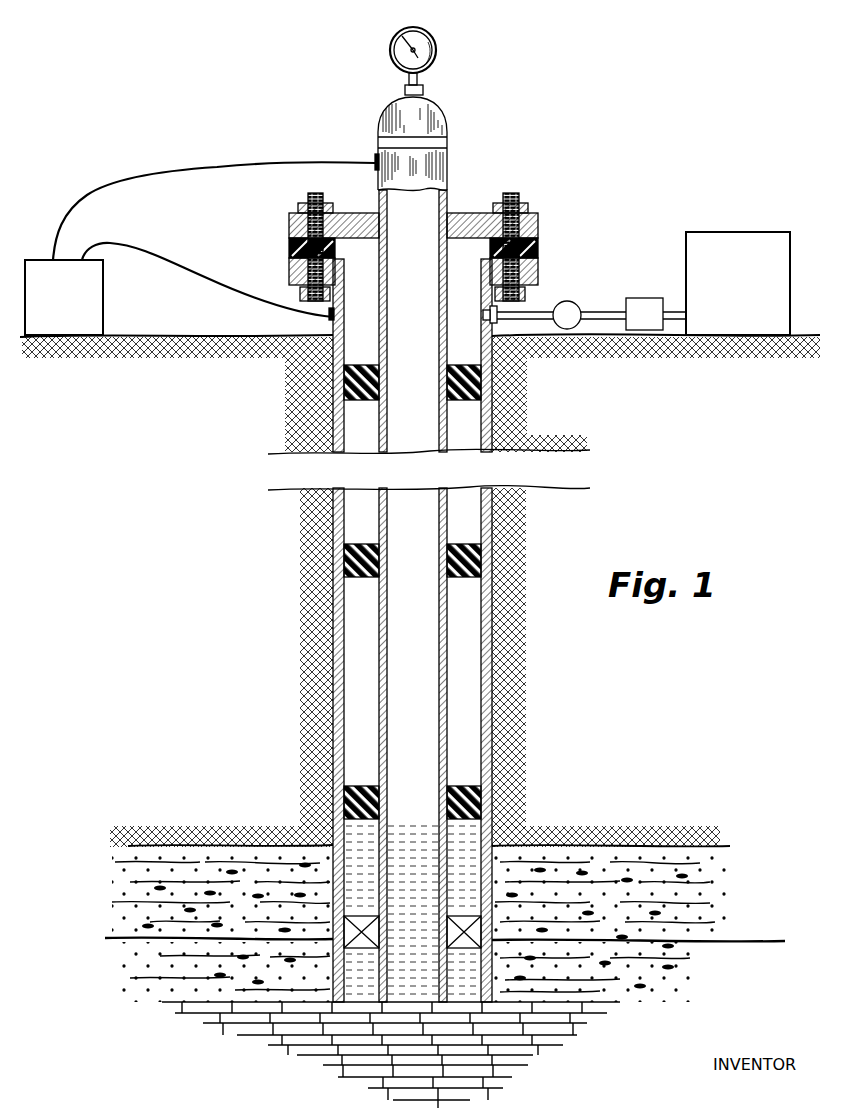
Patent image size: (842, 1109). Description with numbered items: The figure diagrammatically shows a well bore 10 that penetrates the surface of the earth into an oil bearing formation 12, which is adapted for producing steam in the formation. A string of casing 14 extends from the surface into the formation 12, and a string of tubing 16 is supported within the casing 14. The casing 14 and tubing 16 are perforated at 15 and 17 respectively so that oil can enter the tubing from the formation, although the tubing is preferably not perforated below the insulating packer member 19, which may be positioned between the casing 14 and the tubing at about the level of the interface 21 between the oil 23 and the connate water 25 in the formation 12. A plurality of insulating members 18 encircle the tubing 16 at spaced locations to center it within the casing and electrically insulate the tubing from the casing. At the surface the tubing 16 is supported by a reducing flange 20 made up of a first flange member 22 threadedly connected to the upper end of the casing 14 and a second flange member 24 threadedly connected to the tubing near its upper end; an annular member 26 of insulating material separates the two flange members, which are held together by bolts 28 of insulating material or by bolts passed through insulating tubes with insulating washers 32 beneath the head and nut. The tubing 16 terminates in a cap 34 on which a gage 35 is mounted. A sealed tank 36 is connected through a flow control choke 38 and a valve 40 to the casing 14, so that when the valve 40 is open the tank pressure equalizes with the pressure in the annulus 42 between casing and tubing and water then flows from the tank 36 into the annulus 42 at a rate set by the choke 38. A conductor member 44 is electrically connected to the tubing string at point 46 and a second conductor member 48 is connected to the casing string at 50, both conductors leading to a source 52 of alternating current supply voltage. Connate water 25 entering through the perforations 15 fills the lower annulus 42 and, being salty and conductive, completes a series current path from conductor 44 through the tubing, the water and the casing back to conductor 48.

The well bore 10 is at (492, 612).
The oil bearing formation 12 is at (677, 847).
The casing 14 is at (482, 790).
The casing perforations 15 is at (337, 975).
The tubing 16 is at (447, 428).
The tubing perforations 17 is at (392, 852).
The insulating members 18 is at (345, 383).
The insulating packer member 19 is at (495, 918).
The reducing flange 20 is at (450, 212).
The interface 21 is at (725, 943).
The first flange member 22 is at (540, 281).
The oil 23 is at (715, 901).
The second flange member 24 is at (540, 222).
The connate water 25 is at (190, 967).
The annular member 26 is at (540, 253).
The bolts 28 is at (312, 200).
The insulating washers 32 is at (300, 212).
The cap 34 is at (449, 135).
The gage 35 is at (428, 30).
The sealed tank 36 is at (763, 232).
The flow control choke 38 is at (653, 298).
The valve 40 is at (575, 329).
The annulus 42 is at (463, 699).
The conductor member 44 is at (170, 172).
The connection point 46 is at (376, 160).
The second conductor member 48 is at (176, 267).
The casing connection point 50 is at (330, 318).
The source of alternating current supply voltage 52 is at (104, 326).